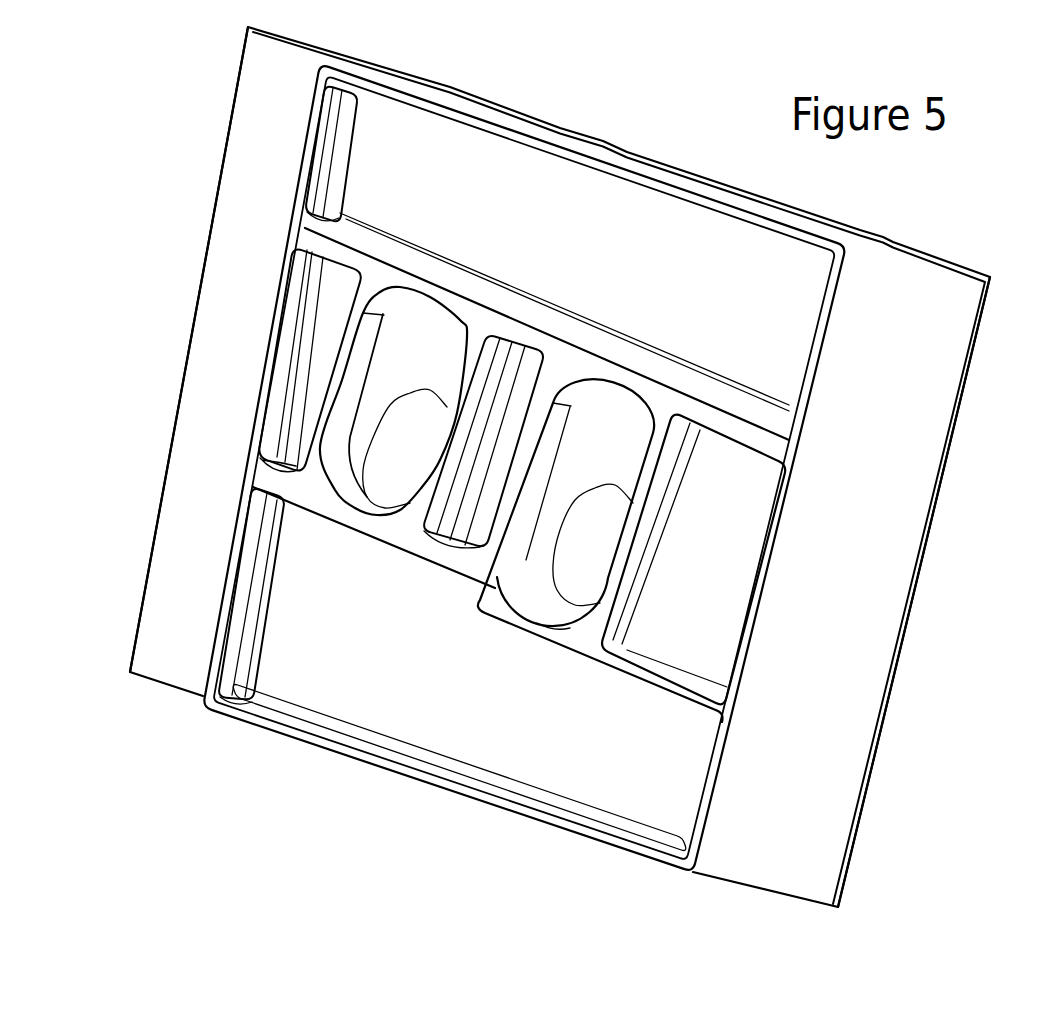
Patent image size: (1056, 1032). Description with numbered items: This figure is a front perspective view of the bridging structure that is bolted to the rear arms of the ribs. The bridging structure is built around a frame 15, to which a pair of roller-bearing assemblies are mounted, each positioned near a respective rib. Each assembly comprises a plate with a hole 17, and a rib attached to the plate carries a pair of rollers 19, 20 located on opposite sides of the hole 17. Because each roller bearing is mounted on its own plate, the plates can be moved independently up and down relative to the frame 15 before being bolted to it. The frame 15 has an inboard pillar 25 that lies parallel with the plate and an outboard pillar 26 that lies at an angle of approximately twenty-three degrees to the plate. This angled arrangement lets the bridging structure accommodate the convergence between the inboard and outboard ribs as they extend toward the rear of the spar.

The frame 15 is at (863, 785).
The hole 17 is at (430, 365).
The roller 19 is at (583, 568).
The roller 20 is at (619, 394).
The inboard pillar 25 is at (213, 413).
The outboard pillar 26 is at (852, 550).